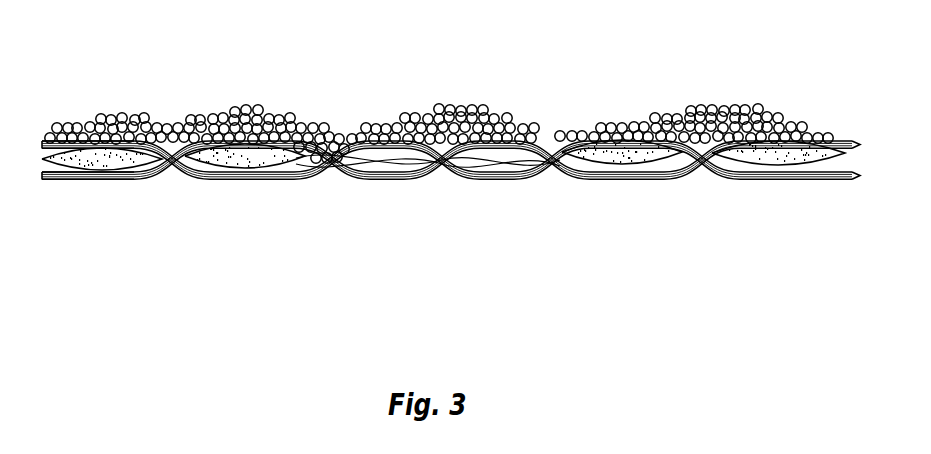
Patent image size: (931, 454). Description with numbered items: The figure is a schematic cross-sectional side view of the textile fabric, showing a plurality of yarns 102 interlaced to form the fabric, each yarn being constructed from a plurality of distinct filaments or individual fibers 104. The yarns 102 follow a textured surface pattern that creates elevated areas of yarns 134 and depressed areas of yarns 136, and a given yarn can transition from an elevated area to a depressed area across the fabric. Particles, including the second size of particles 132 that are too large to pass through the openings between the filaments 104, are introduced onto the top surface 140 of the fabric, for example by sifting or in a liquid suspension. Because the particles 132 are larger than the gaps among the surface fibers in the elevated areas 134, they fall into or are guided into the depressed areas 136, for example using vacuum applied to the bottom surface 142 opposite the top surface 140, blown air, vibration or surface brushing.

The yarns 102 is at (50, 140).
The filaments or individual fibers 104 is at (82, 118).
The second size of particles 132 is at (146, 110).
The elevated areas of yarns 134 is at (668, 128).
The depressed areas of yarns 136 is at (258, 180).
The top surface 140 is at (384, 112).
The bottom surface 142 is at (446, 180).